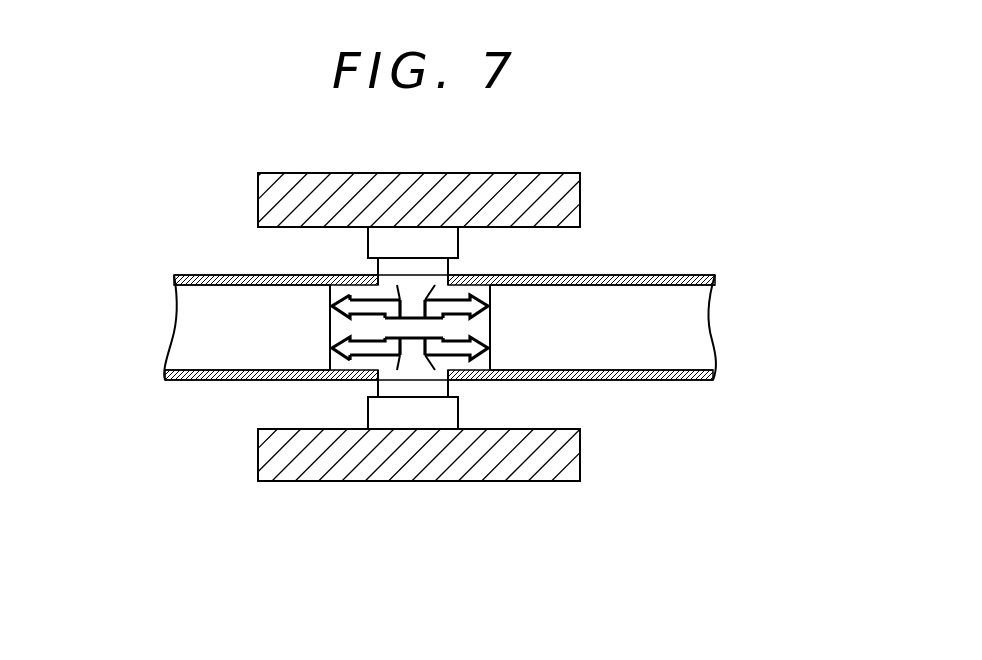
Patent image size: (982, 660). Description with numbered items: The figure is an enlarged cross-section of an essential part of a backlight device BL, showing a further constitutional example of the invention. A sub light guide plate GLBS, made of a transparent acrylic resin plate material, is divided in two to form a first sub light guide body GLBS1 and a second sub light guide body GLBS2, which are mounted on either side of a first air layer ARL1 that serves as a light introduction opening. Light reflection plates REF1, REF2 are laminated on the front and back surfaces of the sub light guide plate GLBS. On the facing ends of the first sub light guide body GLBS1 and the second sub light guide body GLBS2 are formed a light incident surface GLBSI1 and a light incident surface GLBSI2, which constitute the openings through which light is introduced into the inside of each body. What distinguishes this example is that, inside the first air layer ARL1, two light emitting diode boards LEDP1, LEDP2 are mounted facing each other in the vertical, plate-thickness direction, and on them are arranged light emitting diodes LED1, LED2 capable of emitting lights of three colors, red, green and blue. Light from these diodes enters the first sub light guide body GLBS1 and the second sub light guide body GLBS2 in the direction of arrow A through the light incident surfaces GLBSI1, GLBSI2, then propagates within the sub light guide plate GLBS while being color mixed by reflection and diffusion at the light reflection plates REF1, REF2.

The light emitting diode board LEDP2 is at (499, 177).
The light emitting diode board LEDP1 is at (513, 477).
The light emitting diode LED2 is at (374, 294).
The light emitting diode LED1 is at (376, 377).
The light reflection plate REF1 is at (677, 275).
The light reflection plate REF2 is at (677, 381).
The sub light guide plate GLBS is at (729, 304).
The first sub light guide body GLBS1 is at (180, 316).
The second sub light guide body GLBS2 is at (700, 350).
The light incident surface GLBSI1 is at (329, 323).
The light incident surface GLBSI2 is at (491, 337).
The first air layer ARL1 is at (491, 327).
The backlight device BL is at (188, 259).
The arrow A is at (360, 303).